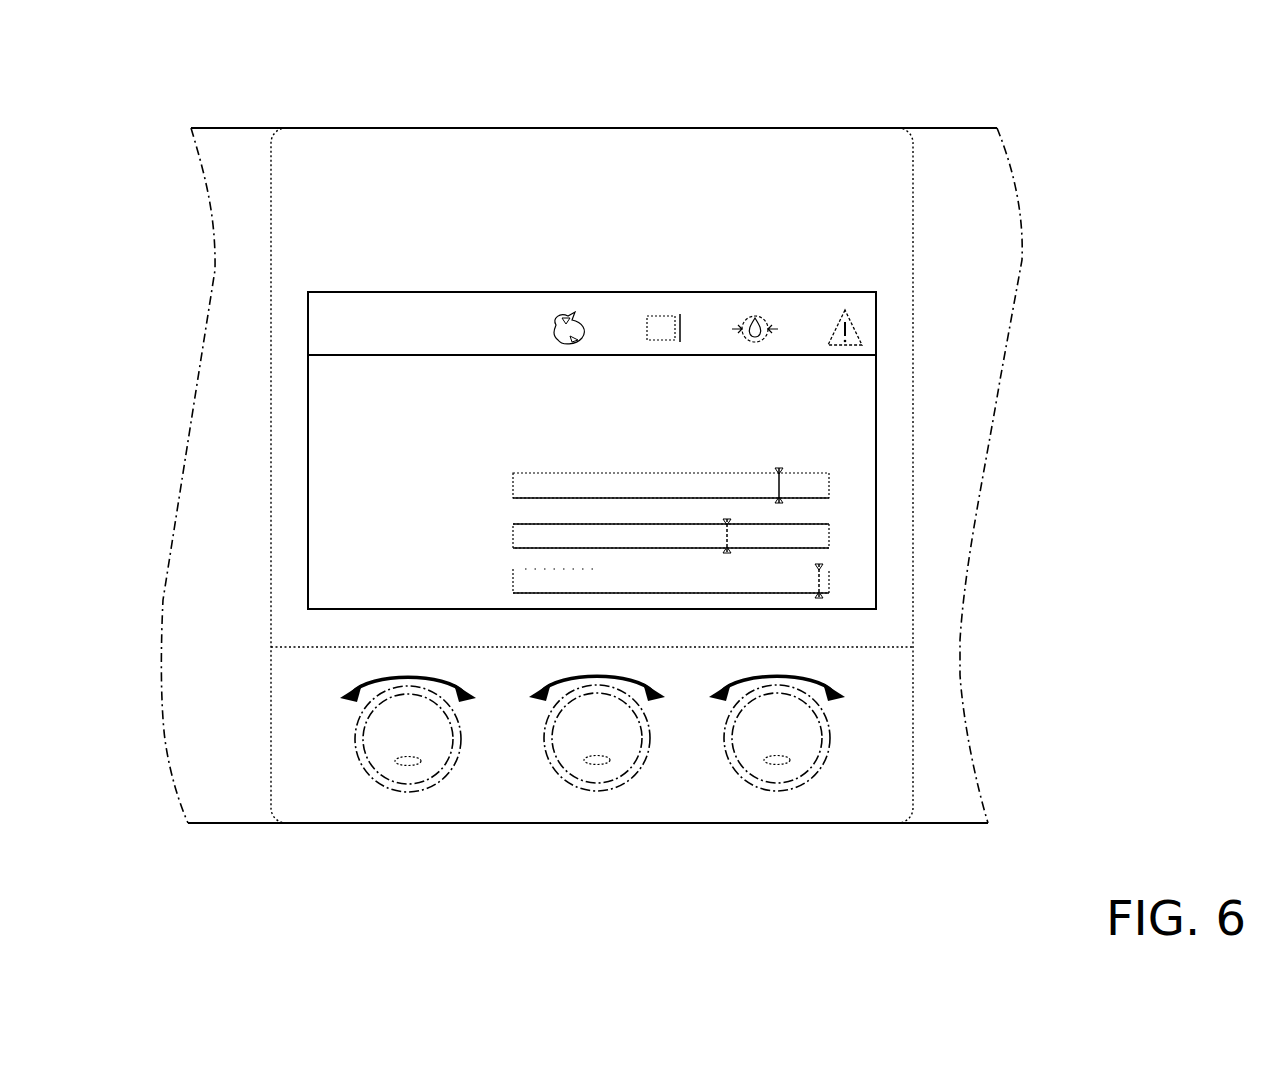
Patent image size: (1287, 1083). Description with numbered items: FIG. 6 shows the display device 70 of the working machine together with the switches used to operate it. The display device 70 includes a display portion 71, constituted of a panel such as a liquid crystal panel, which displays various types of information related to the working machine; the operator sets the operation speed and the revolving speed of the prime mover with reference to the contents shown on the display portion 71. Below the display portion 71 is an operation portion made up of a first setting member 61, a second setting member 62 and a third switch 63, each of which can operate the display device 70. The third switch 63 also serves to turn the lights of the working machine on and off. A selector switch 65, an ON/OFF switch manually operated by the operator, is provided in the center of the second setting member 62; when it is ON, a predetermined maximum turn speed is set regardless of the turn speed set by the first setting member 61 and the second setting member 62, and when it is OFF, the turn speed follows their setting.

The display device 70 is at (322, 128).
The display portion 71 is at (808, 292).
The first setting member 61 is at (408, 792).
The second setting member 62 is at (597, 790).
The third switch 63 is at (777, 790).
The selector switch 65 is at (554, 762).